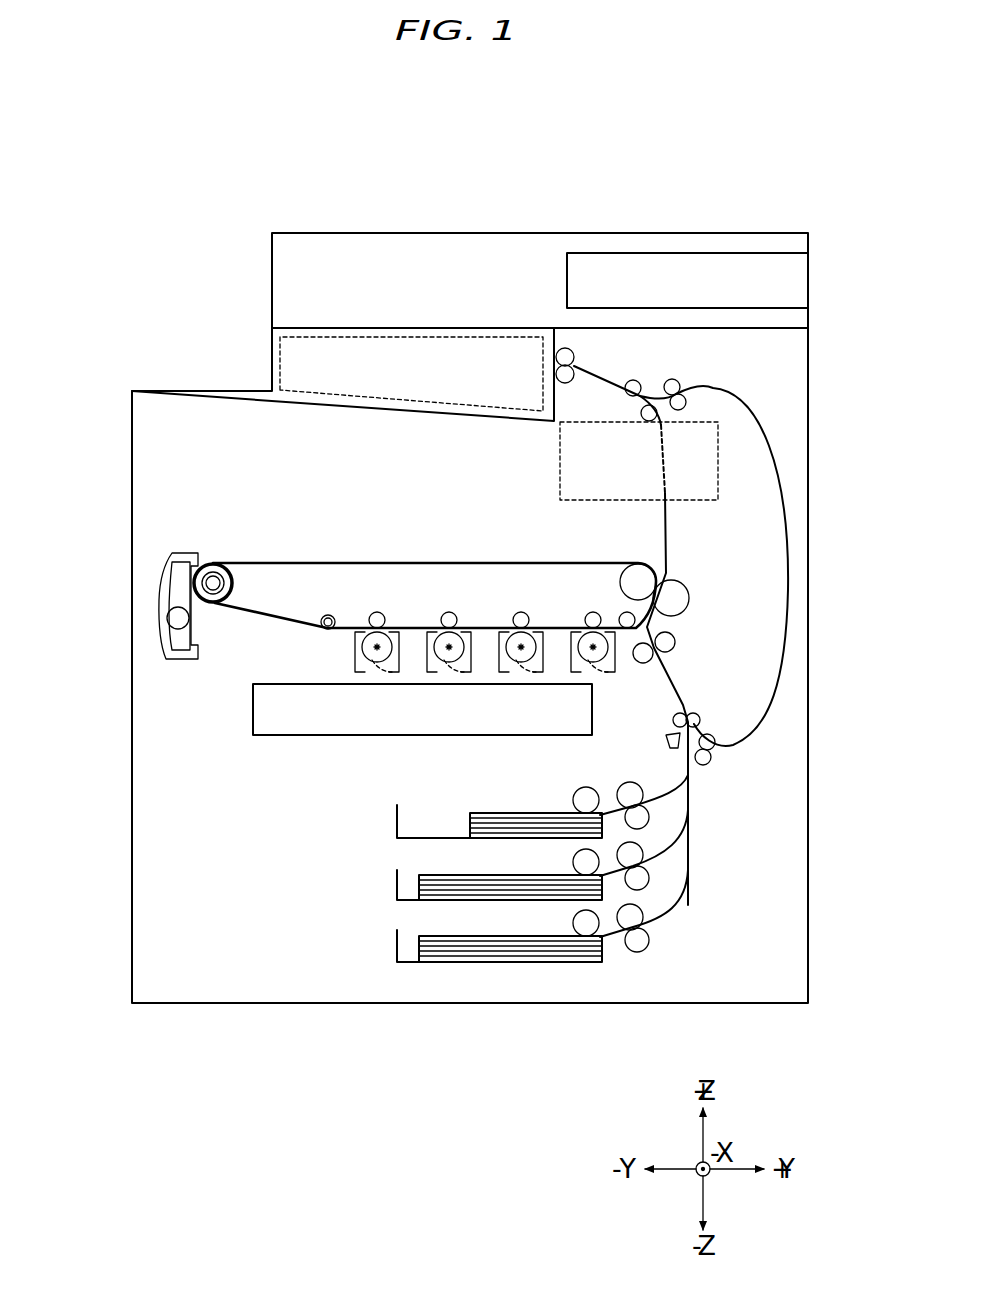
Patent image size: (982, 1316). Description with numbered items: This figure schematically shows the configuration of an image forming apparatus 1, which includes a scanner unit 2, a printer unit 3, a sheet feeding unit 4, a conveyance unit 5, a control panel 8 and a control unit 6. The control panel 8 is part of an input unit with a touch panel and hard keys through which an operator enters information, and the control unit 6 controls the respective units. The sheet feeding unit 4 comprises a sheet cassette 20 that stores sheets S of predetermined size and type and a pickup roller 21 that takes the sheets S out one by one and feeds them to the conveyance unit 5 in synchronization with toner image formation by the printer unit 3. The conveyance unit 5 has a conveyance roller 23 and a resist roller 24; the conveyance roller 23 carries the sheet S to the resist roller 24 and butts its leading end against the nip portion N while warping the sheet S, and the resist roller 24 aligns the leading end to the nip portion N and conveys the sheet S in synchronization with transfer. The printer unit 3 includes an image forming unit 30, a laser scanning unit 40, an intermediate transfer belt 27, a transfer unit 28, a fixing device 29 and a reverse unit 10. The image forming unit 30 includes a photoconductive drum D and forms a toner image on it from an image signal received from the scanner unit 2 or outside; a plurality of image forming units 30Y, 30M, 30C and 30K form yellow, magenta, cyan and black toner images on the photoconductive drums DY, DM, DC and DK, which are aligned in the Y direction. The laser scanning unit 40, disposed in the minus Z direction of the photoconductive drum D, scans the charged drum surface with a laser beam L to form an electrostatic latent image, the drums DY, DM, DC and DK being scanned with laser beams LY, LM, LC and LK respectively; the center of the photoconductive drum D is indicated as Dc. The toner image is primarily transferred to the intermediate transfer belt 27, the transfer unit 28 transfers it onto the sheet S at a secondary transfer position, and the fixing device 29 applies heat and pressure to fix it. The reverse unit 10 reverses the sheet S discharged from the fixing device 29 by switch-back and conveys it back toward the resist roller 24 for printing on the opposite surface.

The image forming apparatus 1 is at (549, 182).
The scanner unit 2 is at (400, 265).
The printer unit 3 is at (148, 513).
The sheet feeding unit 4 is at (216, 933).
The conveyance unit 5 is at (727, 697).
The control unit 6 is at (312, 330).
The control panel 8 is at (668, 253).
The reverse unit 10 is at (780, 503).
The sheet cassette 20 is at (400, 826).
The pickup roller 21 is at (574, 800).
The conveyance roller 23 is at (692, 722).
The resist roller 24 is at (643, 654).
The intermediate transfer belt 27 is at (270, 563).
The transfer unit 28 is at (645, 580).
The fixing device 29 is at (560, 463).
The laser scanning unit 40 is at (251, 707).
The image forming unit 30 is at (360, 614).
The image forming unit (yellow) 30Y is at (377, 620).
The image forming unit (magenta) 30M is at (436, 614).
The image forming unit (cyan) 30C is at (508, 614).
The image forming unit (black) 30K is at (581, 614).
The photoconductive drum D is at (380, 640).
The first photoconductive drum DY is at (339, 652).
The second photoconductive drum DM is at (452, 640).
The third photoconductive drum DC is at (523, 640).
The fourth photoconductive drum DK is at (596, 640).
The center of the photoconductive drum Dc is at (374, 647).
The laser beam L is at (386, 673).
The first laser beam LY is at (382, 666).
The second laser beam LM is at (456, 673).
The third laser beam LC is at (526, 673).
The fourth laser beam LK is at (596, 673).
The sheet S is at (480, 812).
The nip portion N is at (657, 649).